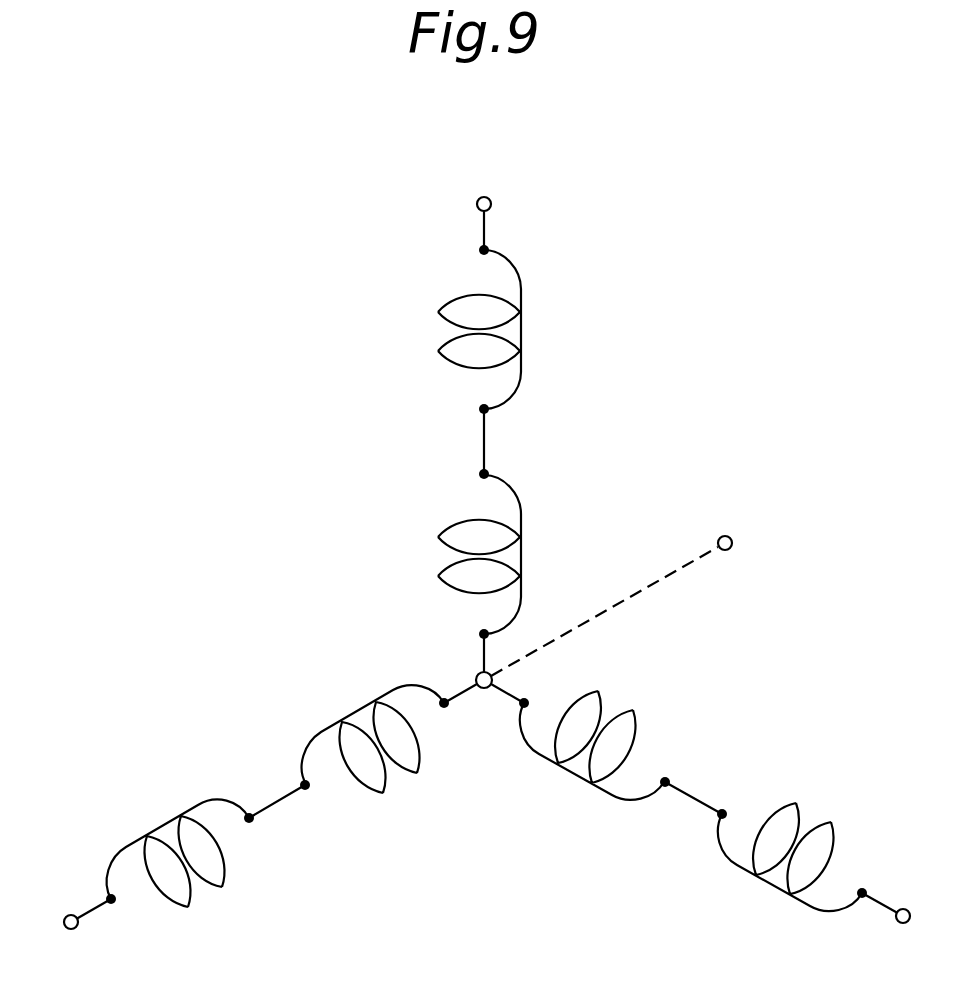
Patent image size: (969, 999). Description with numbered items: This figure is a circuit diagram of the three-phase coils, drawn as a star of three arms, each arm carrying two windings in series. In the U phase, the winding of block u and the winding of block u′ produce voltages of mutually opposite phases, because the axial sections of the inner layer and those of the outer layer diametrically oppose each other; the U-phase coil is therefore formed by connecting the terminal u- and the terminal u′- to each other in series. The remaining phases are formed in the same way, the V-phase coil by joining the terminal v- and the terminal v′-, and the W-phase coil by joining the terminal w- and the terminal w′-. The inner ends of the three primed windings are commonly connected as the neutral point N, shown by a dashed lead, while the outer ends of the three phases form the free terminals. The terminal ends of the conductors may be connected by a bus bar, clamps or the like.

The u− terminal u- is at (487, 413).
The u′− terminal u′- is at (481, 476).
The v− terminal v- is at (723, 812).
The v′− terminal v′- is at (664, 781).
The w− terminal w- is at (251, 815).
The w′− terminal w′- is at (308, 788).
The neutral point N is at (620, 597).